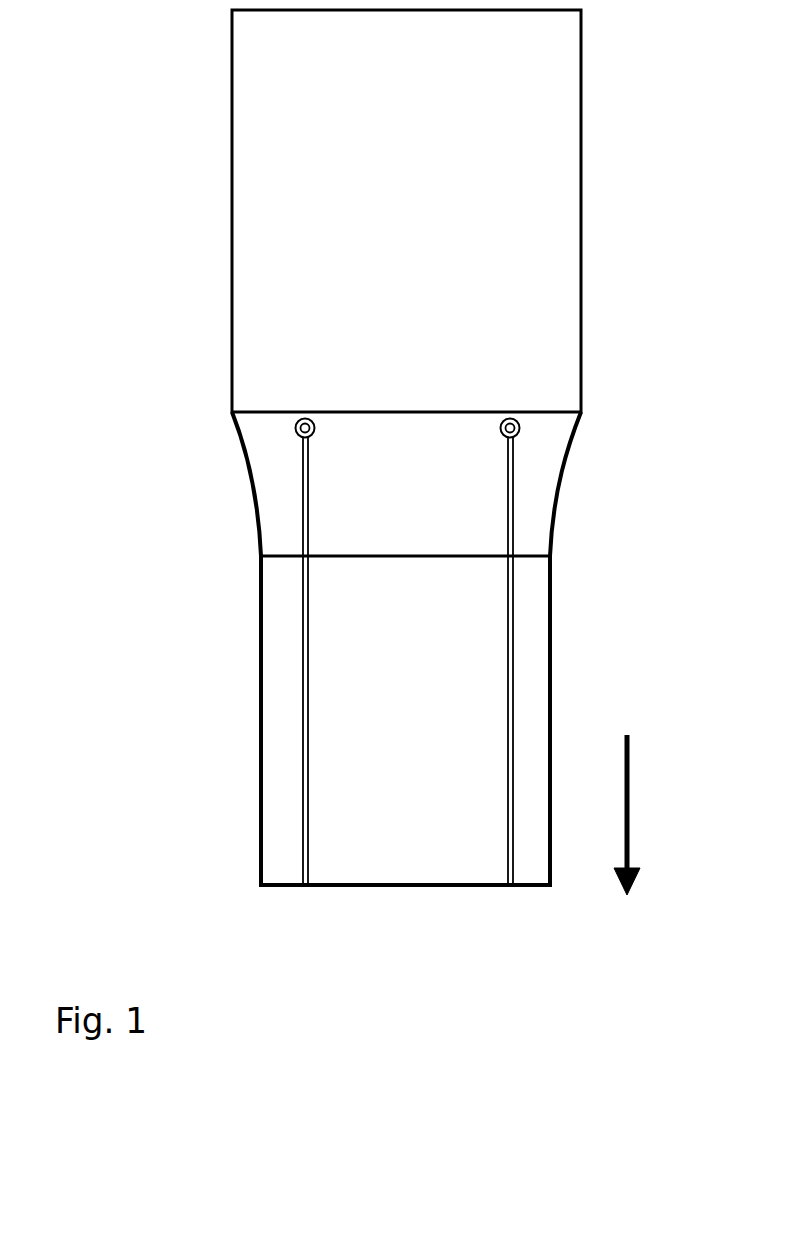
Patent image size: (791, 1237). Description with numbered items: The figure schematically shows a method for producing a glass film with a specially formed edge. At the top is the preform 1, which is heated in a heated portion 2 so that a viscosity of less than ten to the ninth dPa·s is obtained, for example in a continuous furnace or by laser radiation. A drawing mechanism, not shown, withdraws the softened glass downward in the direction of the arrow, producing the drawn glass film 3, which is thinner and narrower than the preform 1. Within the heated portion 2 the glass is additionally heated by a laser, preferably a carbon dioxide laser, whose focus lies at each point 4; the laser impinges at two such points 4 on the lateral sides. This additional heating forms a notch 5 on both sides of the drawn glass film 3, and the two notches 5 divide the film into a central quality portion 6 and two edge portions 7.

The preform 1 is at (558, 152).
The heated portion 2 is at (558, 510).
The drawn glass film 3 is at (258, 652).
The point of incidence of laser 4 is at (297, 437).
The notch 5 is at (302, 890).
The quality portion 6 is at (422, 875).
The edge portion 7 is at (285, 790).